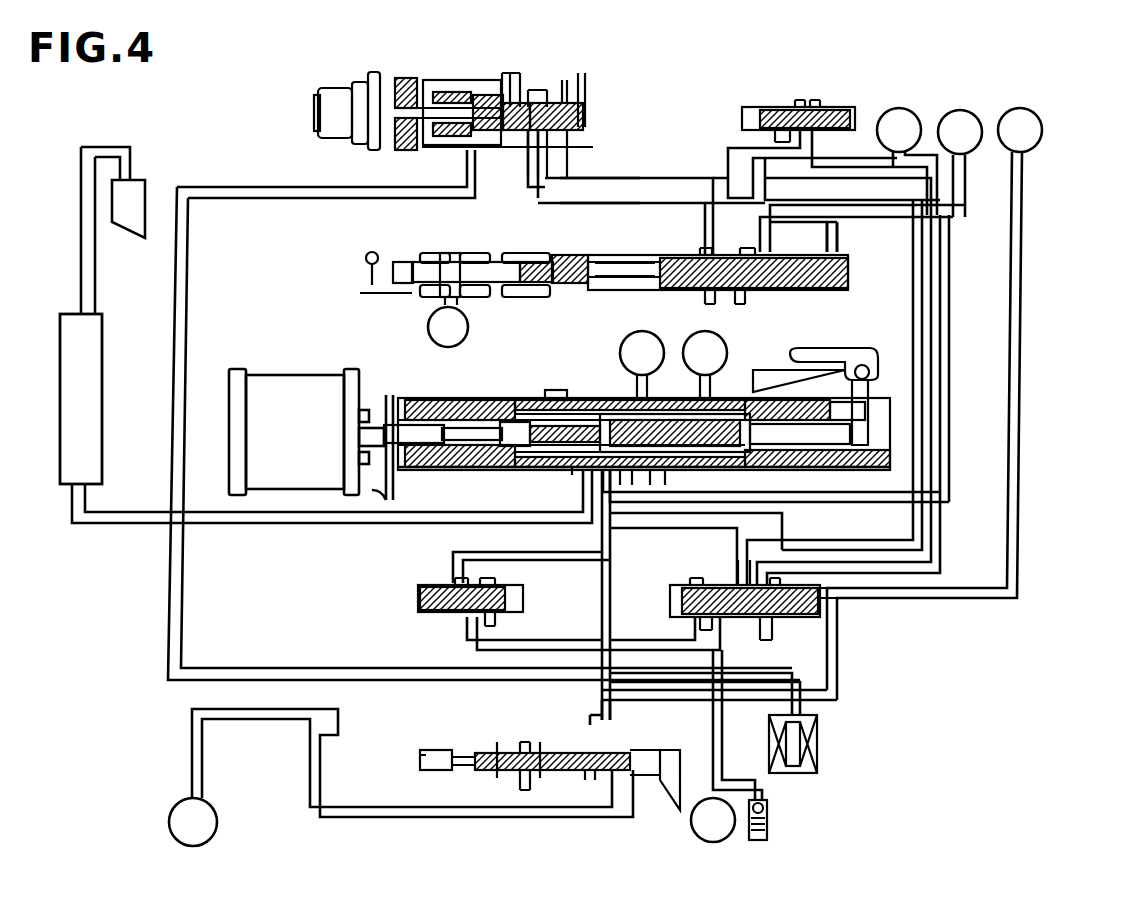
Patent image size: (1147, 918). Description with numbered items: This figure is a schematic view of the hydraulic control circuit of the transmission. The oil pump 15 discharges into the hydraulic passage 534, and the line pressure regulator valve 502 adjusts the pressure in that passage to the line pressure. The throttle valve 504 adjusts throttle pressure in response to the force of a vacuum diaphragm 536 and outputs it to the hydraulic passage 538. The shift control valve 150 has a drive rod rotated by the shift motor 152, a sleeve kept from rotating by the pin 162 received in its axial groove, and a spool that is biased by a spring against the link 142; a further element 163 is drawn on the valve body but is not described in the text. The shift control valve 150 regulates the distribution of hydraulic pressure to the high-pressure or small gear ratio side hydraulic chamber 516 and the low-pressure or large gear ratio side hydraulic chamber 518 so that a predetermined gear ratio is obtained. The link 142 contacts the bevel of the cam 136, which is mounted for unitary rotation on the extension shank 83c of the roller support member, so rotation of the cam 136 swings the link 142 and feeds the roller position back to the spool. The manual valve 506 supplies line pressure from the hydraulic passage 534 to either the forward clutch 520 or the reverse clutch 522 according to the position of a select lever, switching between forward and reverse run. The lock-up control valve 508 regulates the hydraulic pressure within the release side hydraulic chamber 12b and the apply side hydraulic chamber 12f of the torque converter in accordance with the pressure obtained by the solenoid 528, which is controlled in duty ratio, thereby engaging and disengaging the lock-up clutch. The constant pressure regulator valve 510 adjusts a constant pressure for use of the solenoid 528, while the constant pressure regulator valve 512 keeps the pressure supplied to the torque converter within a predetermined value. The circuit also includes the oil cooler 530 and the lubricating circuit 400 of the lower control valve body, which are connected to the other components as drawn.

The lubricating circuit 400 is at (148, 192).
The oil cooler 530 is at (102, 392).
The vacuum diaphragm 536 is at (372, 88).
The throttle valve 504 is at (616, 118).
The hydraulic passage 538 is at (640, 178).
The constant pressure regulator valve 512 is at (813, 95).
The release side hydraulic chamber 12b is at (898, 108).
The reverse clutch 522 is at (1042, 137).
The oil pump 15 is at (975, 148).
The hydraulic passage 534 is at (882, 224).
The line pressure regulator valve 502 is at (558, 244).
The extension shank 83c is at (428, 337).
The shift motor 152 is at (298, 369).
The shift control valve 150 is at (523, 388).
The port 163 is at (556, 390).
The pin 162 is at (545, 470).
The low-pressure side hydraulic chamber 518 is at (650, 322).
The high-pressure side hydraulic chamber 516 is at (720, 340).
The cam 136 is at (765, 370).
The link 142 is at (876, 360).
The constant pressure regulator valve 510 is at (426, 570).
The lock-up control valve 508 is at (686, 575).
The manual valve 506 is at (484, 737).
The solenoid 528 is at (820, 738).
The forward clutch 520 is at (180, 800).
The apply side hydraulic chamber 12f is at (690, 822).